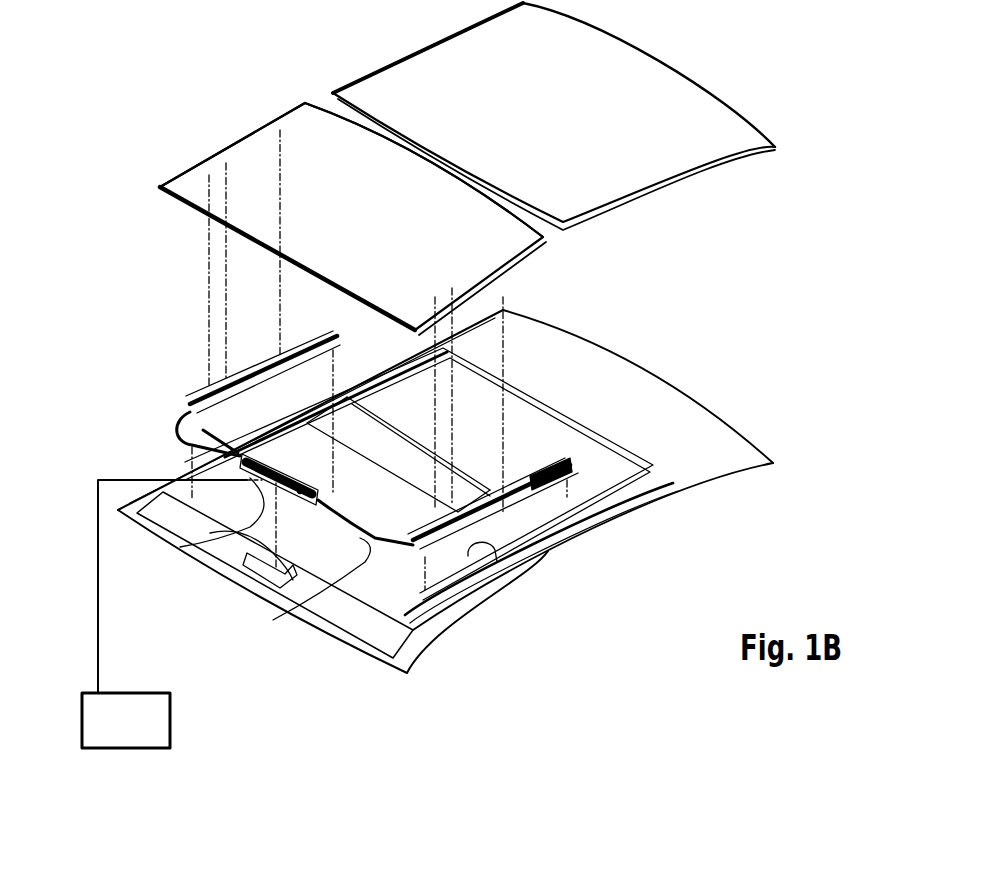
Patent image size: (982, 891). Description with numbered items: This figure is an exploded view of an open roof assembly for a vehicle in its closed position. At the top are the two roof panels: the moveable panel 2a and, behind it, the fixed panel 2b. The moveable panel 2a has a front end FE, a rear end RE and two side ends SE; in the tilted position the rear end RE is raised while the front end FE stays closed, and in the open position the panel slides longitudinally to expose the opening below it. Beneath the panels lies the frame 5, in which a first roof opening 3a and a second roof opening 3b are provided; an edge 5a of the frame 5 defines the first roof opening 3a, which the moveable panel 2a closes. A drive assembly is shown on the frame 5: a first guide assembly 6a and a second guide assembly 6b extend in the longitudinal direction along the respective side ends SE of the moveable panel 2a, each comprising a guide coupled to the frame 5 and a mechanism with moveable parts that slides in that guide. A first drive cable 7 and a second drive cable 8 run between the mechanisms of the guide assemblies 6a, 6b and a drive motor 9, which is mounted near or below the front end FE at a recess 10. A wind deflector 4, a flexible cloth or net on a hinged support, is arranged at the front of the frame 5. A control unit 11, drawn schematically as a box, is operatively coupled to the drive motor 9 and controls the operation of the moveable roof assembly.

The moveable panel 2a is at (373, 224).
The fixed panel 2b is at (574, 124).
The first roof opening 3a is at (361, 496).
The second roof opening 3b is at (549, 451).
The wind deflector 4 is at (158, 512).
The frame 5 is at (494, 608).
The edge of the frame 5a is at (478, 538).
The first guide assembly 6a is at (509, 516).
The second guide assembly 6b is at (183, 378).
The first drive cable 7 is at (297, 600).
The second drive cable 8 is at (178, 433).
The drive motor 9 is at (182, 547).
The recess 10 is at (247, 577).
The control unit 11 is at (139, 735).
The rear end RE is at (355, 128).
The side ends SE is at (238, 142).
The front end FE is at (250, 258).